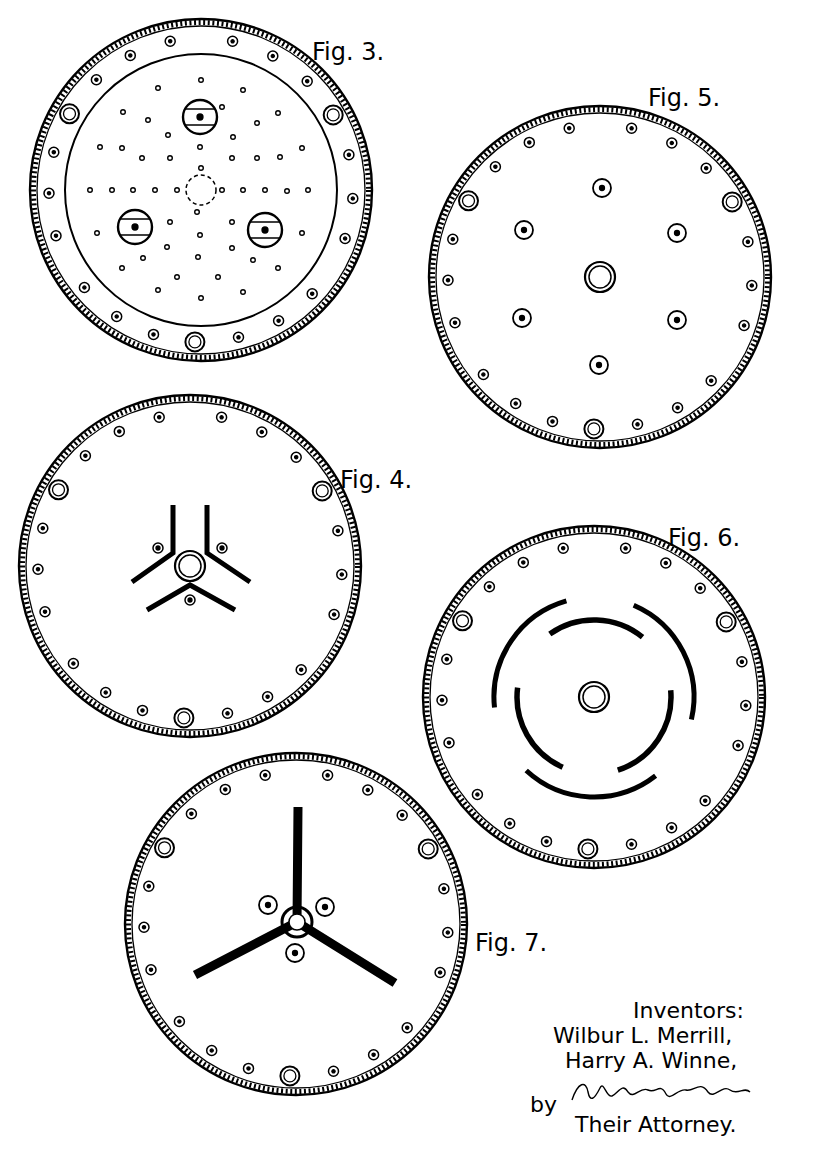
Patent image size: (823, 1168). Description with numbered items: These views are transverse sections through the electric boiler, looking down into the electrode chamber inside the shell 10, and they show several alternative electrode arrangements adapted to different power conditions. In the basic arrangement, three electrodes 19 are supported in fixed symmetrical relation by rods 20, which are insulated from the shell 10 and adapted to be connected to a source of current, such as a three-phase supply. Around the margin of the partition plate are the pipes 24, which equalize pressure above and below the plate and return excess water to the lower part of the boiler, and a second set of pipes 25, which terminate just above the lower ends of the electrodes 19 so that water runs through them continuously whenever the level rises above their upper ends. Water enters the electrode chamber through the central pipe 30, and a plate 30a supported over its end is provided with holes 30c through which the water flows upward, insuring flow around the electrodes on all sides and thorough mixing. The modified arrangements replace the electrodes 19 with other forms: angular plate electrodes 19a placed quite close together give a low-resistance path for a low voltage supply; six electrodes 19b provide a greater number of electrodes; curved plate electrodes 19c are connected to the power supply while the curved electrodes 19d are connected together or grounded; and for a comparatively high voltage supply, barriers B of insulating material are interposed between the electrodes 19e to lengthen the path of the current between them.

In FIG. 3, the shell 10 is at (327, 311).
In FIG. 3, the electrodes 19 is at (218, 112).
In FIG. 4, the electrodes 19a is at (148, 573).
In FIG. 5, the electrodes 19b is at (678, 310).
In FIG. 6, the electrodes 19c is at (521, 704).
In FIG. 6, the electrodes 19d is at (632, 607).
In FIG. 7, the electrodes 19e is at (334, 909).
In FIG. 3, the rods 20 is at (196, 126).
In FIG. 3, the pipes 24 is at (61, 110).
In FIG. 3, the pipes 25 is at (278, 326).
In FIG. 3, the pipe 30 is at (191, 204).
In FIG. 3, the plate 30a is at (322, 183).
In FIG. 3, the holes 30c is at (296, 167).
In FIG. 7, the barriers B is at (306, 852).